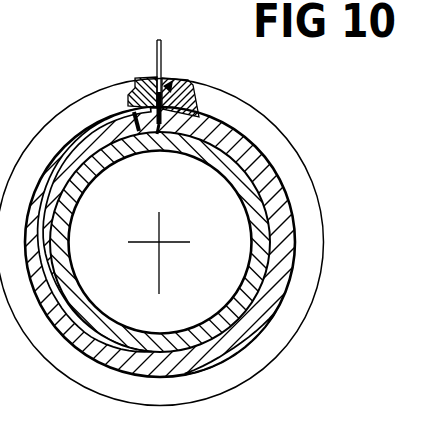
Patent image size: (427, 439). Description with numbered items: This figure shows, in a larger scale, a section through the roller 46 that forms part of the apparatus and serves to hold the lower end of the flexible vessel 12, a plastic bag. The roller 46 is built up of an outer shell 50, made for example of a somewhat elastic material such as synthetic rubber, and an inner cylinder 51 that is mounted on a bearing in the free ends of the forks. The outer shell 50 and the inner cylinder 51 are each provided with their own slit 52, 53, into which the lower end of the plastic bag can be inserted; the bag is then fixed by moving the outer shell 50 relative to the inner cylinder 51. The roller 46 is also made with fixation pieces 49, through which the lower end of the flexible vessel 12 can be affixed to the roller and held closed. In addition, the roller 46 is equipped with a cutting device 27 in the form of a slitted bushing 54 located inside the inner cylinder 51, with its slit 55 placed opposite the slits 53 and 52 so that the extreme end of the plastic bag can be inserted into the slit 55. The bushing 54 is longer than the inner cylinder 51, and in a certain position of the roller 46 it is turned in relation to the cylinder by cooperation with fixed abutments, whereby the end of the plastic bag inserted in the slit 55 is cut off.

The flexible vessel 12 is at (162, 42).
The cutting device 27 is at (133, 112).
The roller 46 is at (276, 115).
The fixation pieces 49 is at (170, 84).
The outer shell 50 is at (308, 214).
The inner cylinder 51 is at (256, 173).
The slit 52 is at (152, 100).
The slit 53 is at (190, 95).
The slitted bushing 54 is at (207, 329).
The slit 55 is at (155, 136).